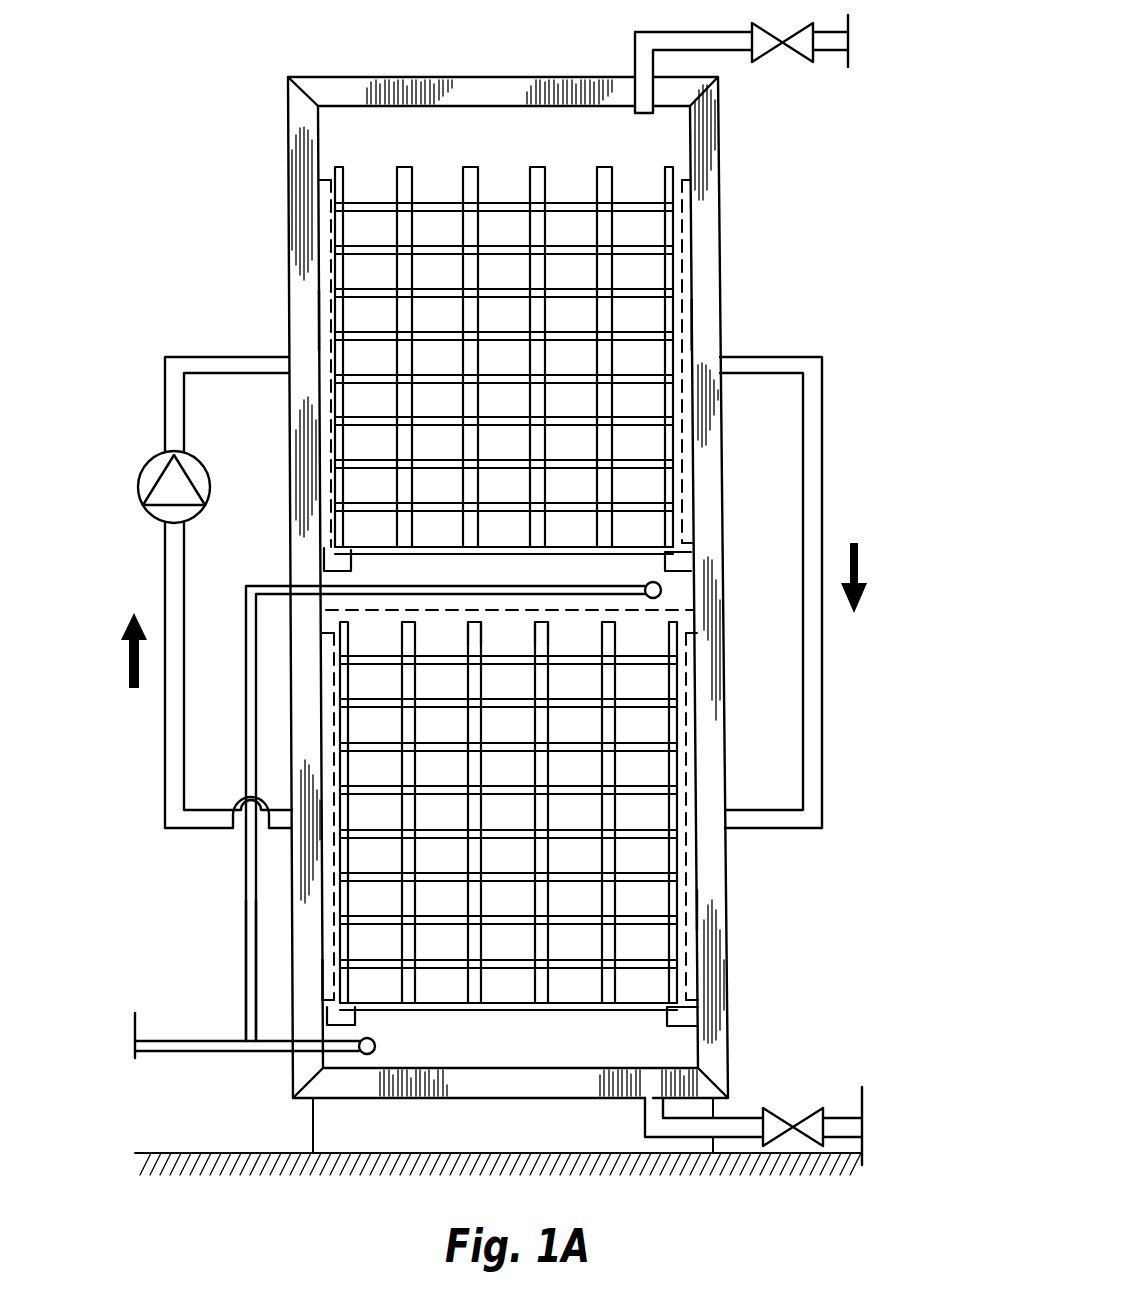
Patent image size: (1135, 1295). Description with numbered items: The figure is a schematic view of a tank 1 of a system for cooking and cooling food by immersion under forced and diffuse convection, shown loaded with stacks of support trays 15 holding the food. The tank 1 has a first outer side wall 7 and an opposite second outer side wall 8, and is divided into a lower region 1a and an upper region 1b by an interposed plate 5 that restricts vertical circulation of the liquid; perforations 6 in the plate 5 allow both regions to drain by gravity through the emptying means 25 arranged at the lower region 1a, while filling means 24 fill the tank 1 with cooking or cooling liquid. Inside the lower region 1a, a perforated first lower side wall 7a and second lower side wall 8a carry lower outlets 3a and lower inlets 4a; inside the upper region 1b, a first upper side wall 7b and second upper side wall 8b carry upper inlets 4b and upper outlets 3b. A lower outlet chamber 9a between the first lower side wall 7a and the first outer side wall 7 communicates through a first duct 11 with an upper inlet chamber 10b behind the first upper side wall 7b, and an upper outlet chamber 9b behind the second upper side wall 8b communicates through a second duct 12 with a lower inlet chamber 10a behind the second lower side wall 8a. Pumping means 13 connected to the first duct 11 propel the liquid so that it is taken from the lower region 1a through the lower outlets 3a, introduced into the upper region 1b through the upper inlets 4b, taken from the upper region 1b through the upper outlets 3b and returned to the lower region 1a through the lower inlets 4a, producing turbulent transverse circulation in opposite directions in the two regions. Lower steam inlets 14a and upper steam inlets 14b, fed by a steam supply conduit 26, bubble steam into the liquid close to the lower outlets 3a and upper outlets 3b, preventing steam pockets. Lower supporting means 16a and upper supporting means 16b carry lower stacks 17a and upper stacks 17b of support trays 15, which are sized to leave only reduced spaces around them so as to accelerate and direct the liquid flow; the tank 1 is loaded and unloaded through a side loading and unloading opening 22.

The tank 1 is at (258, 135).
The lower region 1a is at (535, 1059).
The upper region 1b is at (585, 150).
The lower outlets 3a is at (333, 983).
The upper outlets 3b is at (692, 322).
The lower inlets 4a is at (688, 940).
The upper inlets 4b is at (328, 318).
The plate 5 is at (455, 617).
The perforations 6 is at (566, 617).
The first outer side wall 7 is at (316, 386).
The first lower side wall 7a is at (337, 950).
The first upper side wall 7b is at (328, 270).
The second outer side wall 8 is at (695, 487).
The second lower side wall 8a is at (688, 907).
The second upper side wall 8b is at (690, 272).
The lower outlet chamber 9a is at (327, 908).
The upper outlet chamber 9b is at (687, 227).
The lower inlet chamber 10a is at (693, 855).
The upper inlet chamber 10b is at (325, 207).
The first duct 11 is at (168, 438).
The second duct 12 is at (822, 440).
The pumping means 13 is at (160, 520).
The lower steam inlets 14a is at (376, 1046).
The upper steam inlets 14b is at (670, 593).
The support trays 15 is at (462, 183).
The lower supporting means 16a is at (693, 1040).
The upper supporting means 16b is at (333, 560).
The lower stacks 17a is at (589, 1028).
The upper stacks 17b is at (645, 185).
The side loading and unloading opening 22 is at (486, 122).
The filling means 24 is at (730, 33).
The emptying means 25 is at (733, 1127).
The steam supply conduit 26 is at (175, 1043).